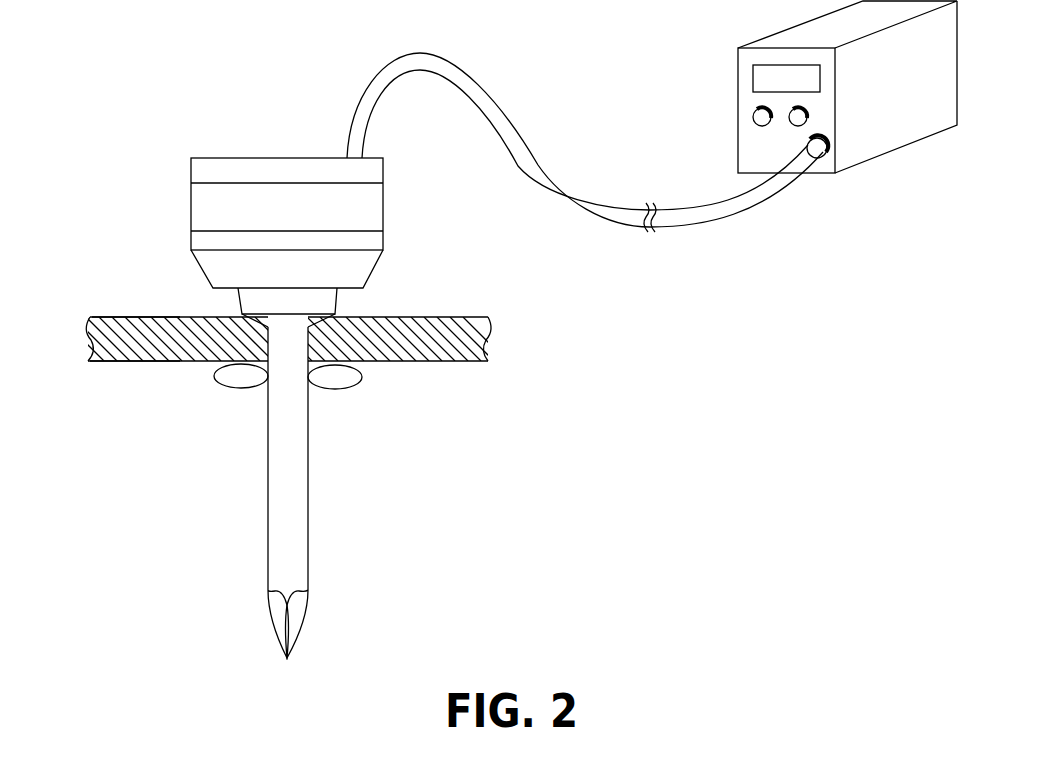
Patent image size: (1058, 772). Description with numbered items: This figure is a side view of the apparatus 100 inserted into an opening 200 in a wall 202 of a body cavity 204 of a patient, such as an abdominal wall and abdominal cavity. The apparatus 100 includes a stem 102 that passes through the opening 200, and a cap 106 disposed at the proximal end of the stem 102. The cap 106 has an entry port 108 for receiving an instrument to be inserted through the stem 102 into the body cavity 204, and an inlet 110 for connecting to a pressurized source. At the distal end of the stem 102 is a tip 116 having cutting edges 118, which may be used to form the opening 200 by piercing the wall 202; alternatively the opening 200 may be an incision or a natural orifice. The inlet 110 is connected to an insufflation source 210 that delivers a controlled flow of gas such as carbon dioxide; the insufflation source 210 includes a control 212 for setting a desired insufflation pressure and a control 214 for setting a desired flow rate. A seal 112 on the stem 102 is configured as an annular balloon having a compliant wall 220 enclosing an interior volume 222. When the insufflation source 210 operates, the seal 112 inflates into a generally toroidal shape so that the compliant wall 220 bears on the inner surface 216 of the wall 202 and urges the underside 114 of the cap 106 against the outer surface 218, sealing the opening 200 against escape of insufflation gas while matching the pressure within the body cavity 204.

The apparatus 100 is at (138, 183).
The stem 102 is at (309, 444).
The cap 106 is at (384, 208).
The entry port 108 is at (286, 152).
The inlet 110 is at (356, 102).
The seal 112 is at (210, 444).
The underside of the cap 114 is at (250, 323).
The tip 116 is at (274, 628).
The cutting edges 118 is at (296, 618).
The opening 200 is at (338, 319).
The wall 202 is at (490, 337).
The body cavity 204 is at (192, 532).
The insufflation source 210 is at (738, 64).
The control 212 is at (752, 118).
The control 214 is at (790, 121).
The inner surface 216 is at (112, 361).
The outer surface 218 is at (112, 317).
The compliant wall 220 is at (214, 372).
The interior volume 222 is at (240, 376).